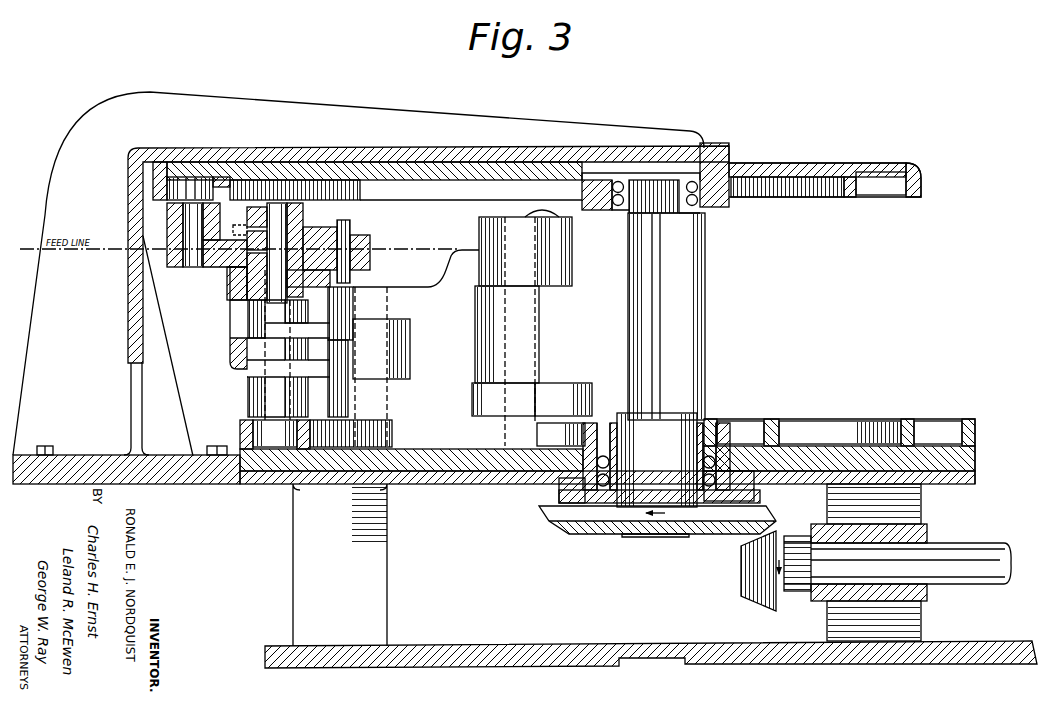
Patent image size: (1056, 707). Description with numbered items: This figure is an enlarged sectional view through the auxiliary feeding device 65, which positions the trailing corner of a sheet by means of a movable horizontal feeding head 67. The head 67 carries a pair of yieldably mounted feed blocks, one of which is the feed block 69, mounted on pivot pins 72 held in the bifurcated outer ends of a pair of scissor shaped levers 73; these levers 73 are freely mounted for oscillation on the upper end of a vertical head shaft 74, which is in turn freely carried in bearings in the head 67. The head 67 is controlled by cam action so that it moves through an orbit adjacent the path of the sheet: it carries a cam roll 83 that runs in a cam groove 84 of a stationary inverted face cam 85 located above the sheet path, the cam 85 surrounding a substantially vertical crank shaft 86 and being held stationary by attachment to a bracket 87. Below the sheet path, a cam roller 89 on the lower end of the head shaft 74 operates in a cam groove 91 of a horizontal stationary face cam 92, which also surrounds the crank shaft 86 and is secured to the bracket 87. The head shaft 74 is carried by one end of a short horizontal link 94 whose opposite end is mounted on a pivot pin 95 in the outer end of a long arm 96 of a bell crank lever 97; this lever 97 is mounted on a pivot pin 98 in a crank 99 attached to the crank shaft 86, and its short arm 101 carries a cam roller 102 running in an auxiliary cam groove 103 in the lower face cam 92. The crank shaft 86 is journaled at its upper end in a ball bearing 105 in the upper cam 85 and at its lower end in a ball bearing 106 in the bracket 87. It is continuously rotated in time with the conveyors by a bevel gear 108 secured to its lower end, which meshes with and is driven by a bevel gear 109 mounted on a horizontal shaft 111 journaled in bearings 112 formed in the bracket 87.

The auxiliary feeding device 65 is at (365, 100).
The bracket 87 is at (470, 123).
The cam groove 91 is at (273, 471).
The cam roll 83 is at (187, 177).
The cam groove 84 is at (228, 180).
The inverted face cam 85 is at (279, 172).
The feeding head 67 is at (233, 269).
The head shaft 74 is at (246, 270).
The scissor shaped levers 73 is at (295, 213).
The feed block 69 is at (361, 238).
The pivot pins 72 is at (343, 226).
The link 94 is at (347, 361).
The pivot pin 95 is at (373, 287).
The long arm 96 is at (417, 297).
The pivot pin 98 is at (529, 328).
The bell crank lever 97 is at (459, 338).
The short arm 101 is at (571, 400).
The auxiliary cam groove 103 is at (529, 436).
The face cam 92 is at (442, 462).
The cam roller 89 is at (255, 436).
The crank shaft 86 is at (651, 200).
The ball bearing 105 is at (721, 207).
The crank 99 is at (705, 308).
The cam roller 102 is at (548, 466).
The ball bearing 106 is at (717, 458).
The bevel gear 108 is at (600, 526).
The bevel gear 109 is at (754, 585).
The horizontal shaft 111 is at (967, 551).
The bearings 112 is at (911, 588).